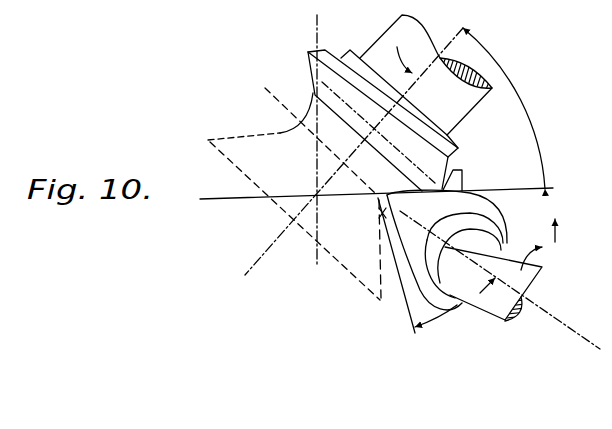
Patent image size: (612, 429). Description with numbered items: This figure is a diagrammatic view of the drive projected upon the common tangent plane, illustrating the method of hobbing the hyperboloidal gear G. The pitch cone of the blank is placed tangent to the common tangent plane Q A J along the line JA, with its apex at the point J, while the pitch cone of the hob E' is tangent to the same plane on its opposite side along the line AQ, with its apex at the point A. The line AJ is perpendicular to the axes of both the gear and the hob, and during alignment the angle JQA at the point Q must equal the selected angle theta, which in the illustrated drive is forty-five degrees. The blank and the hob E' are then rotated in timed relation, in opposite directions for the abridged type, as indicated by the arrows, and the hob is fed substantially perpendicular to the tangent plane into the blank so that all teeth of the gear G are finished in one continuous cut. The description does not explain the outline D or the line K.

The gear G is at (334, 51).
The work material outline D is at (244, 137).
The pitch cone apex of the blank J is at (316, 194).
The pitch cone apex of the hob A is at (377, 196).
The vertex of angle theta in the tangent plane Q is at (454, 172).
The hob E' is at (457, 261).
The tool axis line K is at (360, 146).